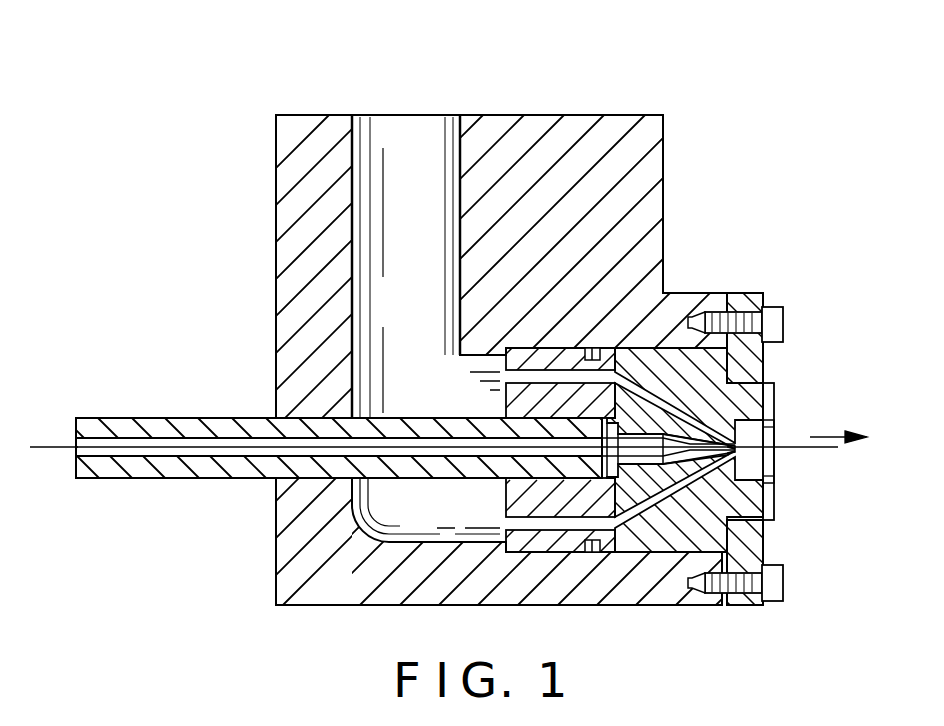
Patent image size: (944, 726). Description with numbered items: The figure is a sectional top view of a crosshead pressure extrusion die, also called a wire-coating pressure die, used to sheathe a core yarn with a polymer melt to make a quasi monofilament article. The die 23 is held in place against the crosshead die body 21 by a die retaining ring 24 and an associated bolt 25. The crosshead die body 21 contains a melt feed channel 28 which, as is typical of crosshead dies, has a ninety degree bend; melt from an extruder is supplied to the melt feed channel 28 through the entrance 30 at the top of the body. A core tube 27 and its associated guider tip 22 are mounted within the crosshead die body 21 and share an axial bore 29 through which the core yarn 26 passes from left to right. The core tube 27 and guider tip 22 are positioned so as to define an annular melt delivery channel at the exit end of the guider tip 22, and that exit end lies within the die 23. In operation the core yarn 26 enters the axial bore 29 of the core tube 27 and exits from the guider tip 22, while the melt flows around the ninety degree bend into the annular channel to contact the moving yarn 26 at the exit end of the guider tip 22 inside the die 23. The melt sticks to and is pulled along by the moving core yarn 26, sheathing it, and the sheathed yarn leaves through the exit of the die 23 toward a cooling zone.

The crosshead die body 21 is at (277, 222).
The guider tip 22 is at (763, 502).
The die 23 is at (765, 398).
The die retaining ring 24 is at (753, 293).
The bolt 25 is at (782, 585).
The core yarn 26 is at (43, 444).
The core tube 27 is at (140, 470).
The melt feed channel 28 is at (427, 305).
The axial bore 29 is at (258, 455).
The entrance 30 is at (428, 115).